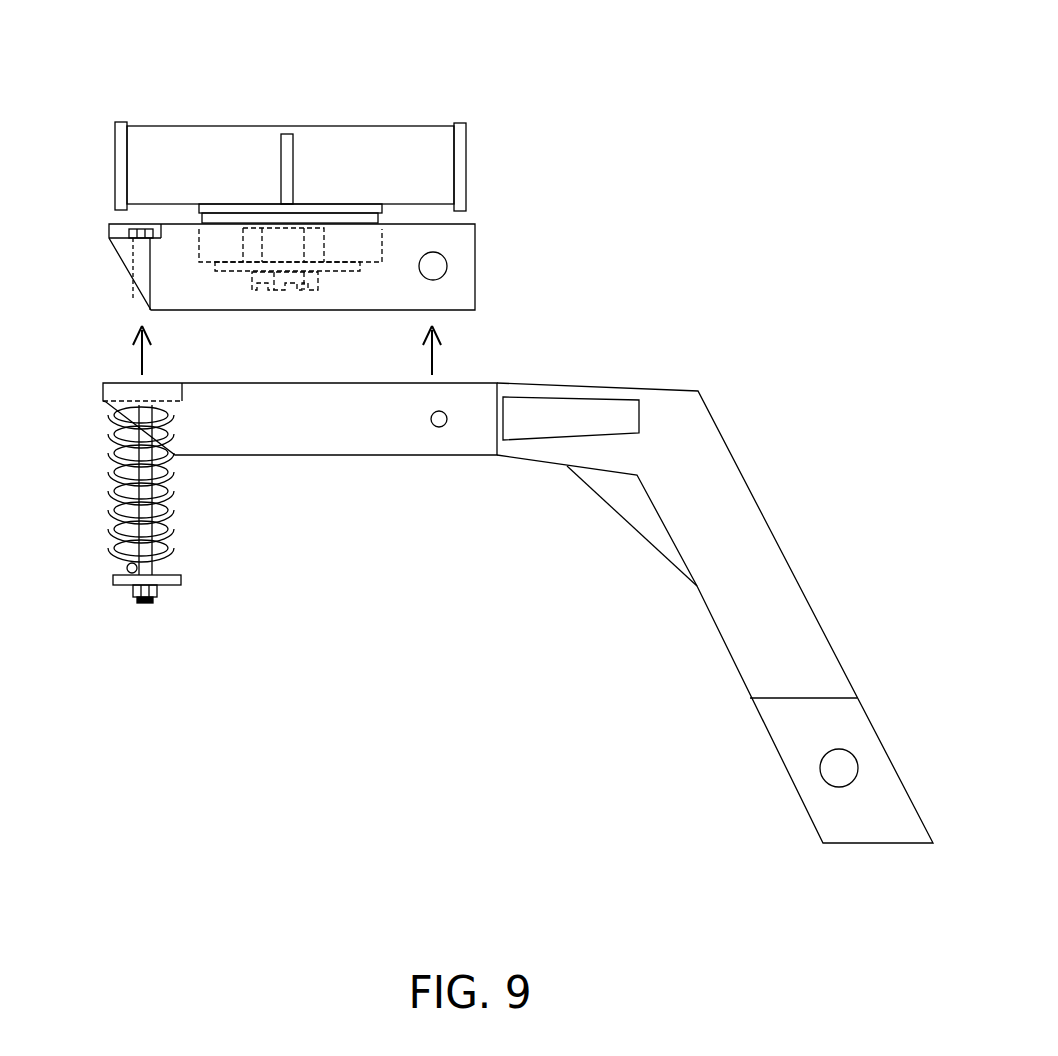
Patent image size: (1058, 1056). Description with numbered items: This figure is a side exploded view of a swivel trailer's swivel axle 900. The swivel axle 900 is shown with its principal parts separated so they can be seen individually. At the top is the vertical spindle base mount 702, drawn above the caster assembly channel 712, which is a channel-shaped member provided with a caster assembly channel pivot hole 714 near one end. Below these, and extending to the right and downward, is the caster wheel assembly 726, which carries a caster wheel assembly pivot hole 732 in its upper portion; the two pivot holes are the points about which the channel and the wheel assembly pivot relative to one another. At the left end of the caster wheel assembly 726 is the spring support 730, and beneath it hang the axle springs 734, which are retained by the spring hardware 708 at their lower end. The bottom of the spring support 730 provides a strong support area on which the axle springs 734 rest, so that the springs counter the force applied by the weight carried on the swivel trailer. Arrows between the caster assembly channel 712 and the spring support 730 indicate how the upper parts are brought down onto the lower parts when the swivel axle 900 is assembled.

The swivel axle 900 is at (147, 49).
The vertical spindle base mount 702 is at (467, 166).
The caster assembly channel 712 is at (473, 283).
The caster assembly channel pivot hole 714 is at (443, 257).
The caster wheel assembly 726 is at (663, 395).
The spring support 730 is at (113, 384).
The caster wheel assembly pivot hole 732 is at (434, 424).
The axle springs 734 is at (117, 501).
The spring hardware 708 is at (139, 600).